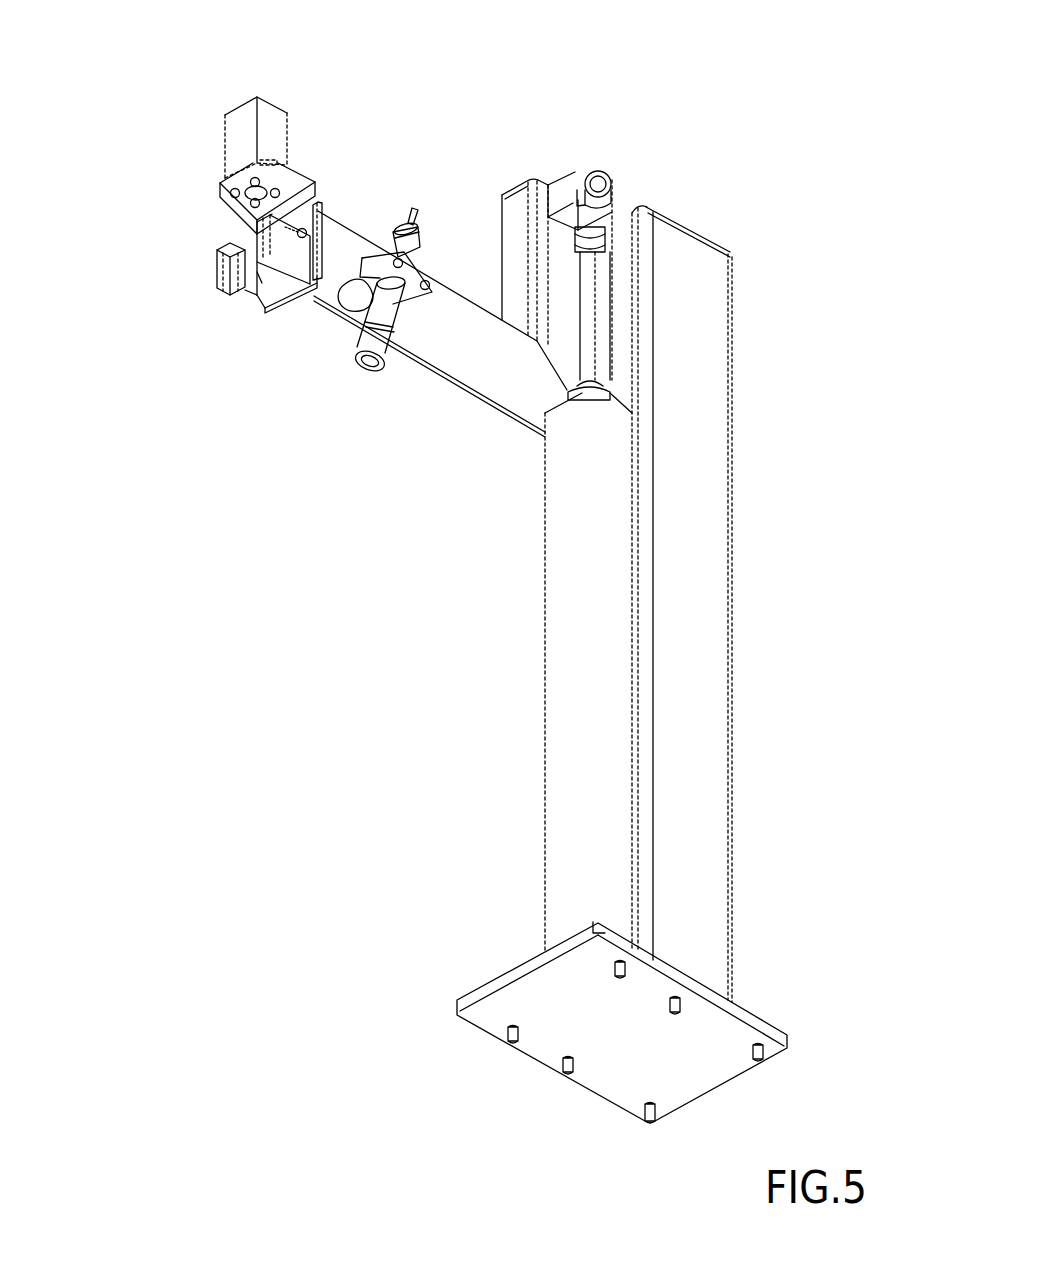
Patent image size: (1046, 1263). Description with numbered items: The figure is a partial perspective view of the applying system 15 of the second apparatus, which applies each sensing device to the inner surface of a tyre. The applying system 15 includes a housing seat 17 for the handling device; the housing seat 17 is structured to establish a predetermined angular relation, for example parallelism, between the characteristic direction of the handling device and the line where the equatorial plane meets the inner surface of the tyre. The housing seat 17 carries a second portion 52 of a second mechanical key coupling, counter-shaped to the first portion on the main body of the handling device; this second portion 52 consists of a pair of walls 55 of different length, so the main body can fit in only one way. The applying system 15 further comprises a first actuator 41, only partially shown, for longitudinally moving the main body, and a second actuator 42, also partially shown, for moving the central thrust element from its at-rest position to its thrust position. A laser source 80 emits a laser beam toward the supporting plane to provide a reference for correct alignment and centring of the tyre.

The applying system 15 is at (186, 125).
The second actuator 42 is at (209, 150).
The second portion of the second mechanical key coupling 52 is at (292, 224).
The walls 55 is at (230, 290).
The housing seat 17 is at (252, 295).
The laser source 80 is at (369, 388).
The first actuator 41 is at (618, 289).